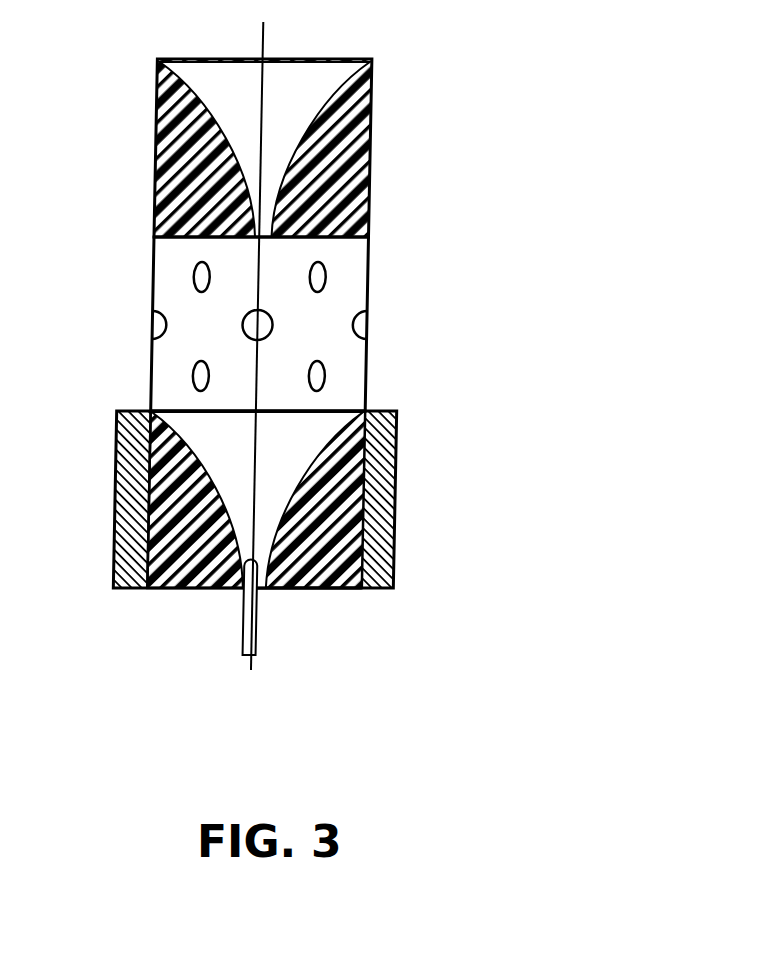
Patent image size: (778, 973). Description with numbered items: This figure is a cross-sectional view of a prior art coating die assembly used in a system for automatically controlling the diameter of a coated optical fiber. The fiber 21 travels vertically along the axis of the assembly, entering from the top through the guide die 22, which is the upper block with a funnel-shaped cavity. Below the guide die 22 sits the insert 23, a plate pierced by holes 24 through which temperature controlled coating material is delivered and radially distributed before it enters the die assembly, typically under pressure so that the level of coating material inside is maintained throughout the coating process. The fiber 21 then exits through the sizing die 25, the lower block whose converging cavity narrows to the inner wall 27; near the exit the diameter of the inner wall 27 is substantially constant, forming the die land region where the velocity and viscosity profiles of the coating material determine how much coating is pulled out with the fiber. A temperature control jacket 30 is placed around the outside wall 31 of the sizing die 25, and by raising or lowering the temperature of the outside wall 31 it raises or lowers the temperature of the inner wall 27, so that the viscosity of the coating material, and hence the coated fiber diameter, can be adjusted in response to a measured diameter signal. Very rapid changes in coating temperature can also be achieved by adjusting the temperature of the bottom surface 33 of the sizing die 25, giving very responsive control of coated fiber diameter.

The fiber 21 is at (263, 33).
The guide die 22 is at (368, 148).
The insert 23 is at (368, 377).
The holes 24 is at (322, 277).
The sizing die 25 is at (297, 570).
The inner wall 27 is at (243, 592).
The temperature control jacket 30 is at (390, 508).
The outside wall 31 is at (131, 507).
The bottom surface 33 is at (312, 590).